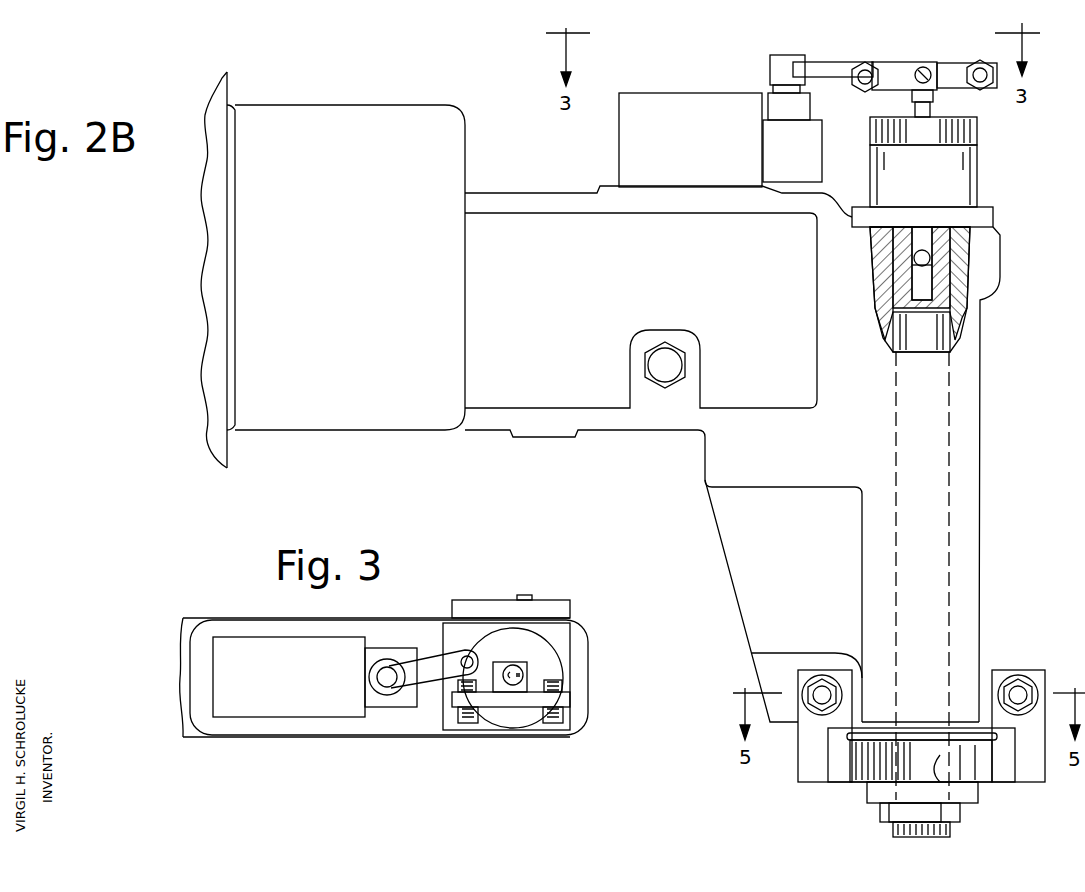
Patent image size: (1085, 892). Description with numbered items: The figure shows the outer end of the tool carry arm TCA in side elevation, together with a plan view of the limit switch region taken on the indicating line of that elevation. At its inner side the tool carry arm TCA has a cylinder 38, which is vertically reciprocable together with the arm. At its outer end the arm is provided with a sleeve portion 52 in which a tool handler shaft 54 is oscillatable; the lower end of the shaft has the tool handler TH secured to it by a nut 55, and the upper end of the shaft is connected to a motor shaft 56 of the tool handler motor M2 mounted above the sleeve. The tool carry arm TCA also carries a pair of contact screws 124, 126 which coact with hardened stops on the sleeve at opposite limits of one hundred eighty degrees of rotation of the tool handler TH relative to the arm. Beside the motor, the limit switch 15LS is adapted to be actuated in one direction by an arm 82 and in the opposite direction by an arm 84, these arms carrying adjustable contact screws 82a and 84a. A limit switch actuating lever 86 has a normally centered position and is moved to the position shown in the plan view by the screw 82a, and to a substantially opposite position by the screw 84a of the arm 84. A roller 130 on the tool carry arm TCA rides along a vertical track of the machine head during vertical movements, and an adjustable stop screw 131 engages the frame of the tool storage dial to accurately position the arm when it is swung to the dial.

In FIG. 2B, the cylinder 38 is at (218, 287).
In FIG. 2B, the sleeve portion 52 is at (972, 453).
In FIG. 2B, the tool handler shaft 54 is at (923, 335).
In FIG. 2B, the nut 55 is at (887, 812).
In FIG. 2B, the motor shaft 56 is at (925, 272).
In FIG. 2B, the arm 82 is at (892, 66).
In FIG. 3, the arm 82 is at (452, 698).
In FIG. 2B, the adjustable contact screw 82a is at (863, 90).
In FIG. 3, the adjustable contact screw 82a is at (467, 723).
In FIG. 2B, the arm 84 is at (952, 66).
In FIG. 3, the arm 84 is at (557, 697).
In FIG. 2B, the adjustable contact screw 84a is at (978, 90).
In FIG. 3, the adjustable contact screw 84a is at (552, 725).
In FIG. 3, the limit switch actuating lever 86 is at (430, 655).
In FIG. 2B, the contact screw 124 is at (820, 680).
In FIG. 2B, the contact screw 126 is at (1020, 680).
In FIG. 3, the roller 130 is at (524, 597).
In FIG. 2B, the adjustable stop screw 131 is at (668, 358).
In FIG. 2B, the tool carry arm TCA is at (638, 318).
In FIG. 3, the tool carry arm TCA is at (180, 678).
In FIG. 2B, the tool handler motor M2 is at (938, 184).
In FIG. 3, the tool handler motor M2 is at (540, 658).
In FIG. 2B, the limit switch 15LS is at (706, 158).
In FIG. 3, the limit switch 15LS is at (322, 688).
In FIG. 2B, the tool handler TH is at (843, 763).